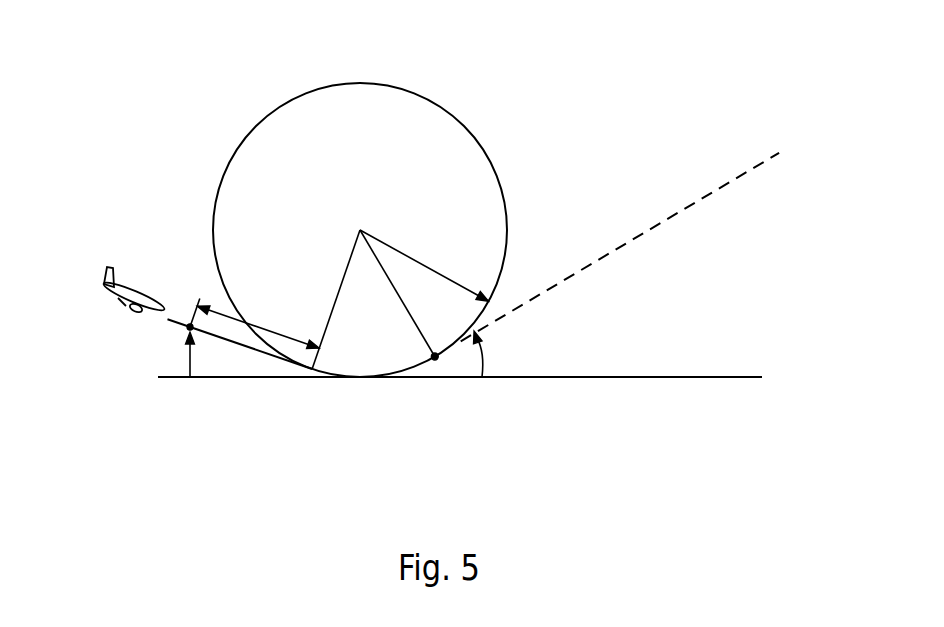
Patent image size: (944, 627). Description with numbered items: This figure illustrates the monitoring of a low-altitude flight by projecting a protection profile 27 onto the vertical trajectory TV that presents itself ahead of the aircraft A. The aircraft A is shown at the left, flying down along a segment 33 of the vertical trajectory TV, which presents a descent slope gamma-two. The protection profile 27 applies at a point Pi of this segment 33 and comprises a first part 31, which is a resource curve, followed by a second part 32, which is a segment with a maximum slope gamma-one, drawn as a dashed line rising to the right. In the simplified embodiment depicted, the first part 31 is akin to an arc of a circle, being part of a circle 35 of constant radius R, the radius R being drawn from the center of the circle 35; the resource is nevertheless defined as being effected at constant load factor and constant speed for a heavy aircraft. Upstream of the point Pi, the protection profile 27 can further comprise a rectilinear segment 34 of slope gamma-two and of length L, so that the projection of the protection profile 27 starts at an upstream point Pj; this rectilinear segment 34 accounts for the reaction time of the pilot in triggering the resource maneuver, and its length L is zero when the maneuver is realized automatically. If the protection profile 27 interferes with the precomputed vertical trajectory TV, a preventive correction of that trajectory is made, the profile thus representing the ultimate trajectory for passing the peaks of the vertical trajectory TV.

The protection profile 27 is at (563, 248).
The first part 31 is at (398, 385).
The second part 32 is at (572, 296).
The segment 33 is at (176, 307).
The rectilinear segment 34 is at (216, 353).
The circle 35 is at (480, 144).
The aircraft A is at (123, 300).
The point Pj is at (190, 323).
The point Pi is at (312, 369).
The length L is at (258, 322).
The radius R is at (424, 265).
The vertical trajectory TV is at (248, 347).